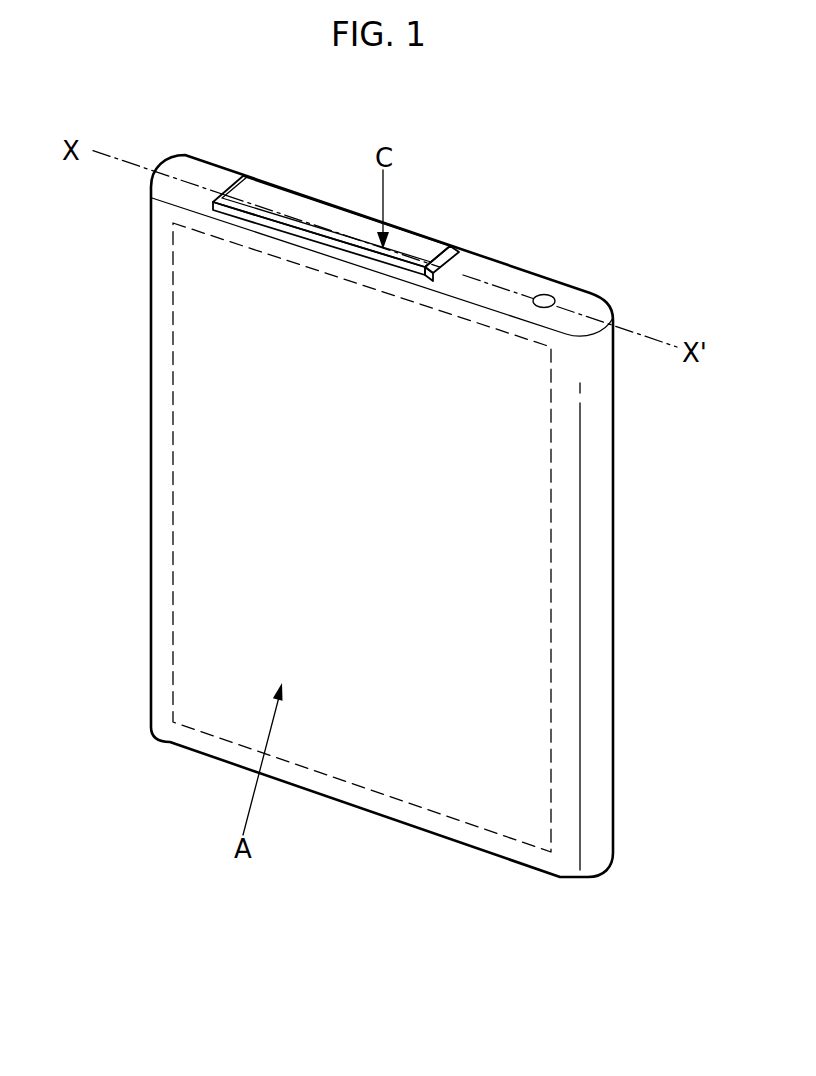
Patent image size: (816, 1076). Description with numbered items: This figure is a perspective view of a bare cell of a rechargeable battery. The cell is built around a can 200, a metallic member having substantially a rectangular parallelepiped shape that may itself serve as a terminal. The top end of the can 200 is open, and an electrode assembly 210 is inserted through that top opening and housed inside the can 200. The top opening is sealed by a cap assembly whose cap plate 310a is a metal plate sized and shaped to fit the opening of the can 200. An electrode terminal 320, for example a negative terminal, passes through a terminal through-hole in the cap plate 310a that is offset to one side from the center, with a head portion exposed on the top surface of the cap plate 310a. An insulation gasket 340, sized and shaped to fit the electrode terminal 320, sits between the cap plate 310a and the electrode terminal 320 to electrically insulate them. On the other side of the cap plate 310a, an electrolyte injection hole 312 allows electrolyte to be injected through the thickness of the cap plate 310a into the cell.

The can 200 is at (598, 603).
The electrode assembly 210 is at (527, 450).
The cap plate 310a is at (593, 303).
The electrolyte injection hole 312 is at (545, 295).
The electrode terminal 320 is at (272, 195).
The insulation gasket 340 is at (452, 246).